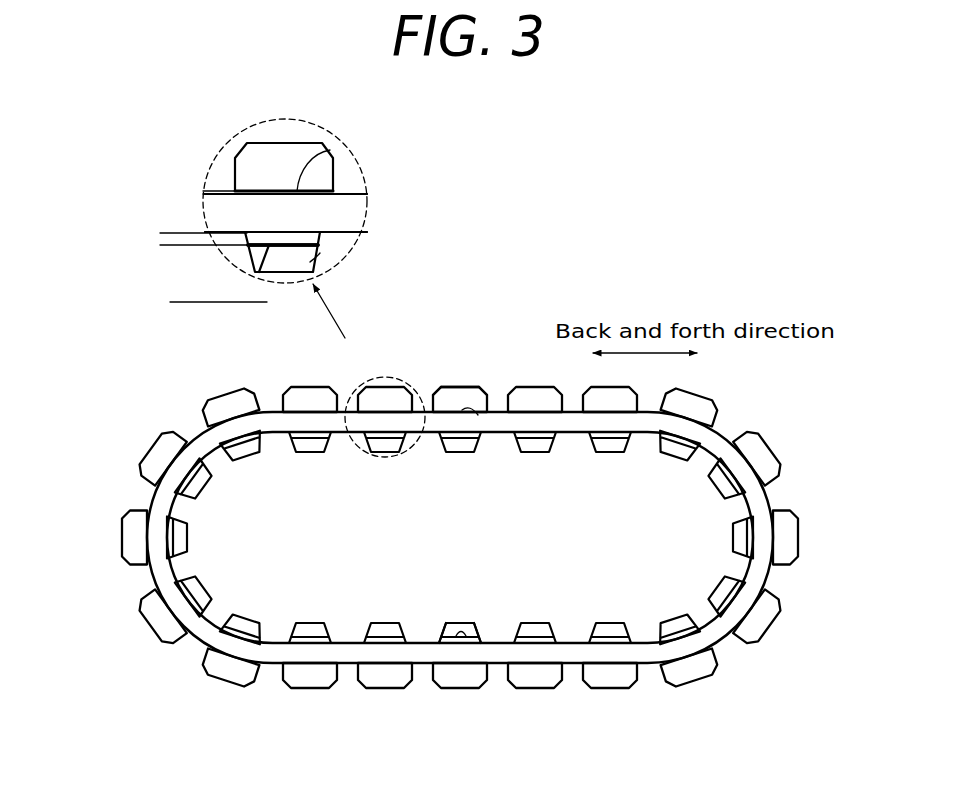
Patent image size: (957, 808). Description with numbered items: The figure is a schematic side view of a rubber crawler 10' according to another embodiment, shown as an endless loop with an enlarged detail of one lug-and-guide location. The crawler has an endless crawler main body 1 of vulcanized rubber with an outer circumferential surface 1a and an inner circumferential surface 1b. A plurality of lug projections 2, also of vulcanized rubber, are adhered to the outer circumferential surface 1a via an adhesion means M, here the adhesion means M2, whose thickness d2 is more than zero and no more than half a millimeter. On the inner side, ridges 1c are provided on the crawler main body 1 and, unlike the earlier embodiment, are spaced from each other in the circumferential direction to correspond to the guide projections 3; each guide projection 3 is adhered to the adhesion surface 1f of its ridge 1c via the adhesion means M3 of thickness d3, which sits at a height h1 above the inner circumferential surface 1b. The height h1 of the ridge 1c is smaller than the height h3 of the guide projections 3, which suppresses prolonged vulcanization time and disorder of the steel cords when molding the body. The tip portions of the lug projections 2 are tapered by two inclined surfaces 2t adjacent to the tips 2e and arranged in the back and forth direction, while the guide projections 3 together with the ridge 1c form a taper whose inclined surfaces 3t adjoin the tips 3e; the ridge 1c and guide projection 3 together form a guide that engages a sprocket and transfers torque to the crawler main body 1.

The crawler main body 1 is at (272, 410).
The outer circumferential surface 1a is at (498, 411).
The inner circumferential surface 1b is at (500, 641).
The ridge 1c is at (442, 641).
The adhesion surface 1f is at (257, 275).
The lug projection 2 is at (447, 403).
The tip of lug projection 2e is at (458, 387).
The inclined surface of lug projection 2t is at (433, 393).
The guide projection 3 is at (460, 455).
The tip of guide projection 3e is at (455, 625).
The inclined surface of guide projection 3t is at (440, 637).
The rubber crawler 10' is at (150, 376).
The adhesion means M is at (478, 415).
The adhesion means for lug projection M2 is at (330, 150).
The adhesion means for guide projection M3 is at (320, 253).
The thickness of adhesion means M2 d2 is at (182, 175).
The thickness of adhesion means M3 d3 is at (158, 243).
The height of ridge h1 is at (160, 232).
The height of guide projection h3 is at (160, 246).